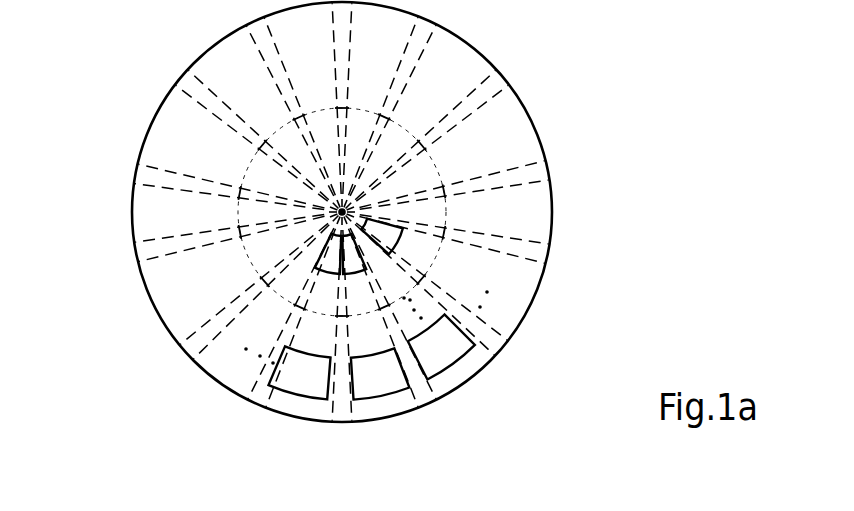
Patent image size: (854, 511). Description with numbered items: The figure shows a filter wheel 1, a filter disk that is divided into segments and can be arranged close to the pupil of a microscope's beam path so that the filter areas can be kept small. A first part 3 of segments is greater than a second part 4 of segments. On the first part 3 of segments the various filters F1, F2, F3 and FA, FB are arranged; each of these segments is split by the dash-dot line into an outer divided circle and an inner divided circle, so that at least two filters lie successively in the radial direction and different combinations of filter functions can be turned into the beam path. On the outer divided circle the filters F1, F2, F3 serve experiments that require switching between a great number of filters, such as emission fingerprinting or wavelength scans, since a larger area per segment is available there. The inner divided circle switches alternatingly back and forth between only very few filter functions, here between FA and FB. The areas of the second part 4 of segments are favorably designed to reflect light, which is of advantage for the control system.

The filter wheel 1 is at (539, 137).
The first part of segments 3 is at (157, 148).
The second part of segments 4 is at (193, 343).
The filter FA is at (352, 263).
The filter FB is at (386, 250).
The filter F1 is at (300, 372).
The filter F2 is at (380, 375).
The filter F3 is at (441, 347).